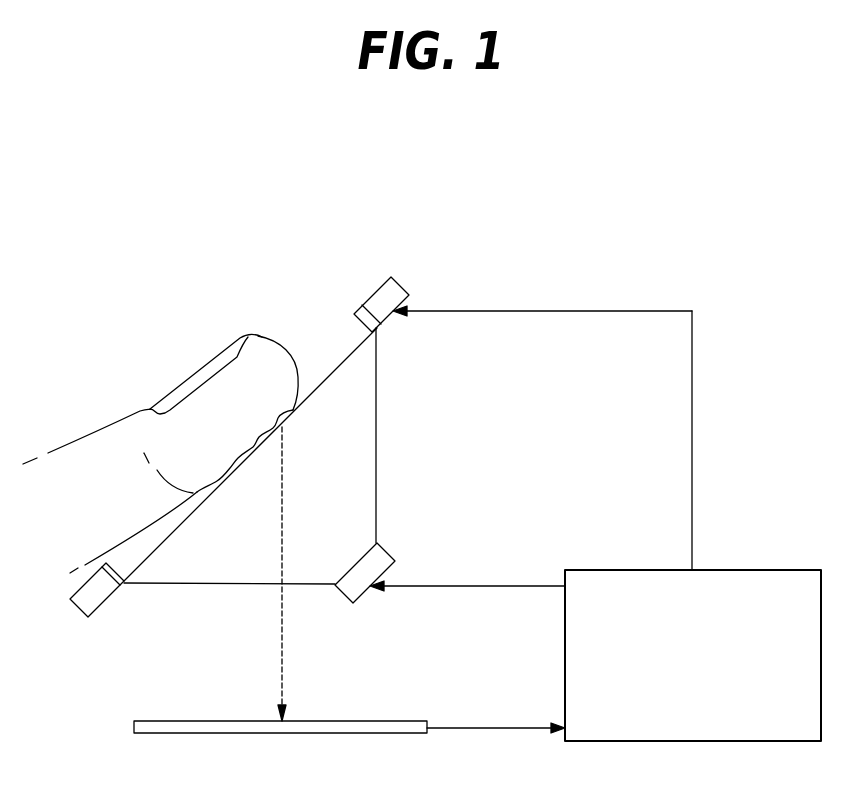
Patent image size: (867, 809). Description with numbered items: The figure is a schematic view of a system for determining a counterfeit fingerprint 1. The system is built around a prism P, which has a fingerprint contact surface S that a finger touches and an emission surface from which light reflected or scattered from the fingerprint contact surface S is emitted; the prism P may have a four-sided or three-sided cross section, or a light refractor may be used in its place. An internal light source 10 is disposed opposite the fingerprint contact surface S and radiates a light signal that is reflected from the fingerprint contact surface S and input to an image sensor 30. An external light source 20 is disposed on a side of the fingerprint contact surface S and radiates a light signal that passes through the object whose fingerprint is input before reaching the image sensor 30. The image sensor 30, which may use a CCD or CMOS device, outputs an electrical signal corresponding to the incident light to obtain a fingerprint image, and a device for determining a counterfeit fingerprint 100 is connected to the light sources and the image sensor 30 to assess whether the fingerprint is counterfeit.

The system for determining a counterfeit fingerprint 1 is at (511, 213).
The internal light source 10 is at (390, 553).
The external light source 20 is at (376, 291).
The image sensor 30 is at (362, 721).
The device for determining a counterfeit fingerprint 100 is at (752, 570).
The prism P is at (396, 412).
The fingerprint contact surface S is at (230, 470).